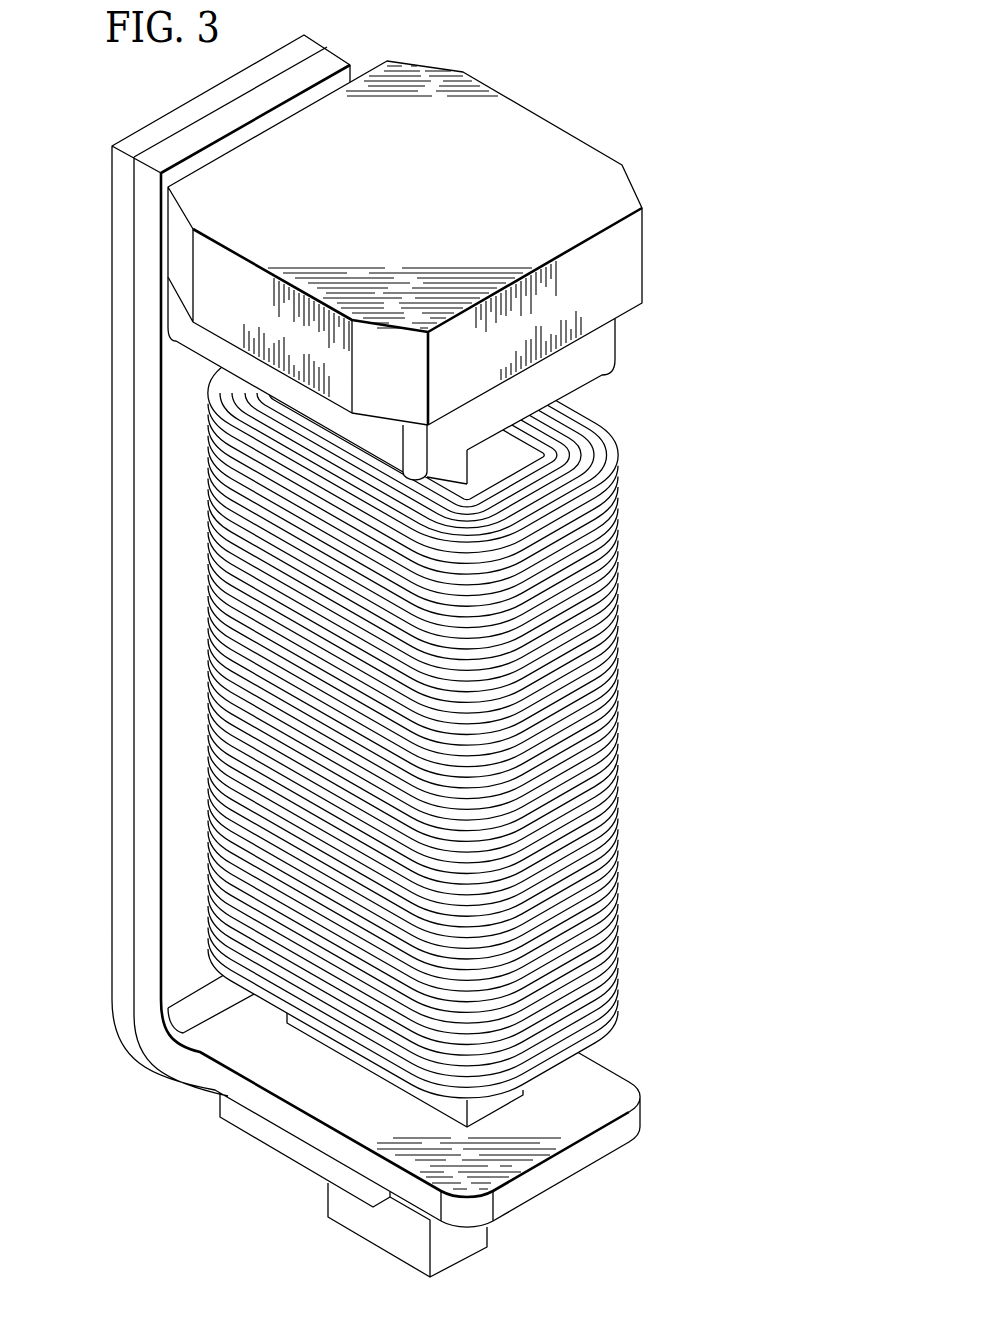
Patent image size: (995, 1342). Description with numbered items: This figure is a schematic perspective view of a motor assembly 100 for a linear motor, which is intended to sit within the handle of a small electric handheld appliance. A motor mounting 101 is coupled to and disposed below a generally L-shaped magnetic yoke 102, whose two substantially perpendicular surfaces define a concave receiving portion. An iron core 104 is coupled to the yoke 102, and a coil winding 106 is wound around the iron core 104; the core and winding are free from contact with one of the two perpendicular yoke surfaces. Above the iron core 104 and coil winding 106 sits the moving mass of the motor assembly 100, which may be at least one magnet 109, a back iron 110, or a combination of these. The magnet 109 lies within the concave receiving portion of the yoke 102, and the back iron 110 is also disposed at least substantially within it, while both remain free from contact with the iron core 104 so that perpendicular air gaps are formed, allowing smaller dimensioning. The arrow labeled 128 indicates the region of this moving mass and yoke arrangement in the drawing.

The motor assembly 100 is at (396, 656).
The motor mounting 101 is at (278, 1168).
The generally L-shaped magnetic yoke 102 is at (112, 741).
The iron core 104 is at (520, 455).
The coil winding 106 is at (620, 833).
The magnet 109 is at (617, 340).
The back iron 110 is at (540, 124).
The core assembly 128 is at (460, 272).